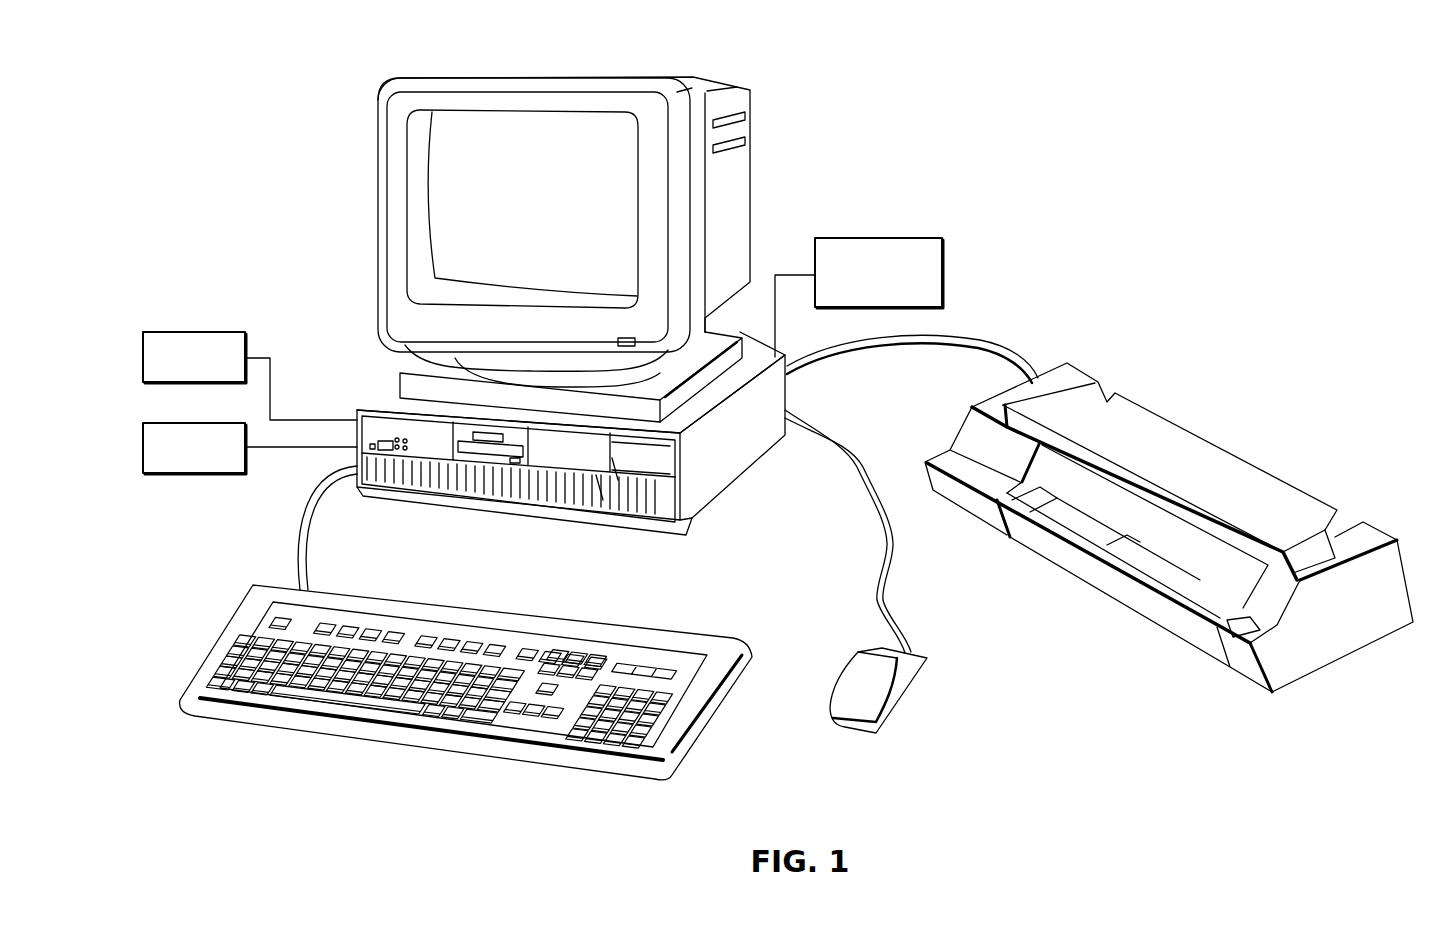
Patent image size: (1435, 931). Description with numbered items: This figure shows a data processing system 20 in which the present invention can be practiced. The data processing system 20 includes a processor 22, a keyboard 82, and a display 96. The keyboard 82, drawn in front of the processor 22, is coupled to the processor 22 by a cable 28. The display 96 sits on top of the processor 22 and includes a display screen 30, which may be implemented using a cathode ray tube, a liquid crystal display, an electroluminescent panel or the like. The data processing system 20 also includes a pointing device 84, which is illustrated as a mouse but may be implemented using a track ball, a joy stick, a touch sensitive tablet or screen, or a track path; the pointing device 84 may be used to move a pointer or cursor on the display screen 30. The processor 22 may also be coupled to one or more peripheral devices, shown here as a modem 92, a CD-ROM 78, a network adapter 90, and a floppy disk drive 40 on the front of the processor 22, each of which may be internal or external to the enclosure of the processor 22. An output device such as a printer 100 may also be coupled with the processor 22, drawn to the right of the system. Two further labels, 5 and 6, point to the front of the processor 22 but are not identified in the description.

The data processing system 20 is at (988, 181).
The processor 22 is at (571, 478).
The display 96 is at (500, 249).
The display screen 30 is at (493, 236).
The floppy disk drive 40 is at (487, 453).
The processor 5 is at (618, 480).
The memory 6 is at (603, 500).
The modem 92 is at (198, 332).
The CD-ROM 78 is at (208, 475).
The network adapter 90 is at (872, 238).
The cable 28 is at (302, 523).
The keyboard 82 is at (408, 752).
The pointing device 84 is at (917, 687).
The printer 100 is at (1095, 363).